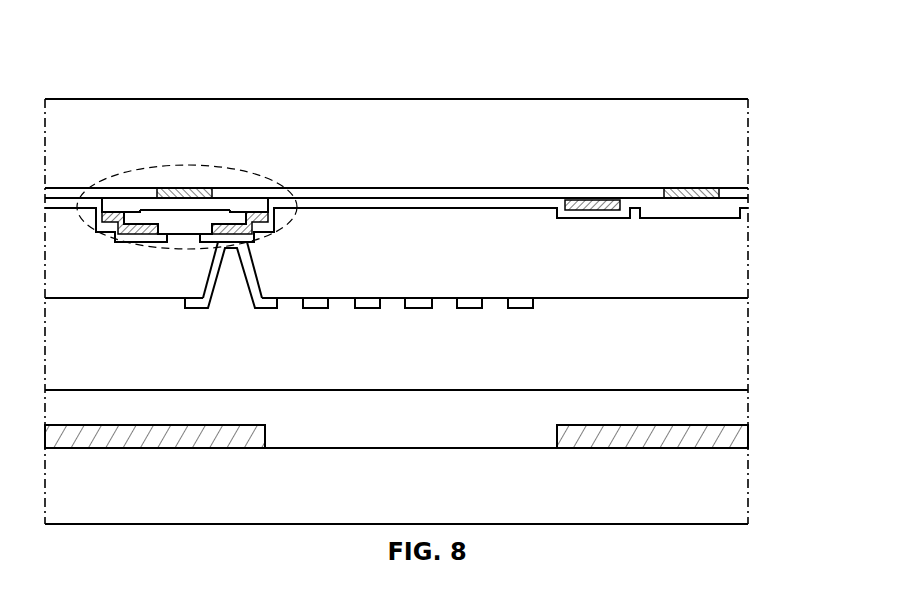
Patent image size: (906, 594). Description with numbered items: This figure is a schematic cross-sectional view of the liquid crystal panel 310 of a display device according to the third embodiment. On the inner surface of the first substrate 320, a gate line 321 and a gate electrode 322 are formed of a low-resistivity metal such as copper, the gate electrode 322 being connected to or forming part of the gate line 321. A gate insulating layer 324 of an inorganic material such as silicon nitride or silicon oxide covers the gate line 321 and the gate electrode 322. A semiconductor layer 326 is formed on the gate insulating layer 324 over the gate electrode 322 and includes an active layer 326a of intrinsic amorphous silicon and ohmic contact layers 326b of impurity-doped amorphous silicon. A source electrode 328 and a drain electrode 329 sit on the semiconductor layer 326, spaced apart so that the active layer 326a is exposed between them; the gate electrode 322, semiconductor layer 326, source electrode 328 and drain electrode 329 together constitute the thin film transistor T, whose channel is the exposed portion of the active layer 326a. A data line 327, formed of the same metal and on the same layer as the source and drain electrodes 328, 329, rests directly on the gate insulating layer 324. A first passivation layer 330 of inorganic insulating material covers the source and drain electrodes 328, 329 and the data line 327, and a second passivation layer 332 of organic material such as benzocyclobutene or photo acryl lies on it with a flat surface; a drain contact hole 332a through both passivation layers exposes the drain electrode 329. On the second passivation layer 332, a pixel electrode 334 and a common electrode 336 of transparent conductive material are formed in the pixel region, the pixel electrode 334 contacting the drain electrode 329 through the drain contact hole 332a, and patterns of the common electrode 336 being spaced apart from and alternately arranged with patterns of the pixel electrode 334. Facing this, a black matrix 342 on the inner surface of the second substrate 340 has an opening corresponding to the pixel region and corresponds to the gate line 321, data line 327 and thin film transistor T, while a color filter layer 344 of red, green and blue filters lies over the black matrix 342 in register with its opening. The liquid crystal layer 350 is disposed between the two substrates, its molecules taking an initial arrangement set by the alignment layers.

The liquid crystal panel 310 is at (712, 78).
The first substrate 320 is at (706, 153).
The gate line 321 is at (673, 189).
The gate electrode 322 is at (178, 190).
The gate insulating layer 324 is at (389, 193).
The semiconductor layer 326 is at (213, 167).
The active layer 326a is at (240, 207).
The ohmic contact layers 326b is at (257, 220).
The data line 327 is at (588, 203).
The source electrode 328 is at (117, 212).
The drain electrode 329 is at (262, 222).
The first passivation layer 330 is at (445, 203).
The second passivation layer 332 is at (503, 227).
The drain contact hole 332a is at (230, 290).
The pixel electrode 334 is at (268, 309).
The common electrode 336 is at (316, 309).
The second substrate 340 is at (734, 502).
The black matrix 342 is at (158, 438).
The color filter layer 344 is at (418, 438).
The liquid crystal layer 350 is at (728, 338).
The thin film transistor T is at (102, 182).